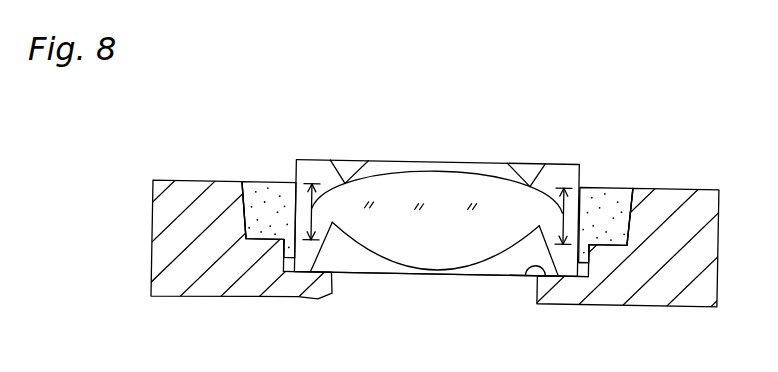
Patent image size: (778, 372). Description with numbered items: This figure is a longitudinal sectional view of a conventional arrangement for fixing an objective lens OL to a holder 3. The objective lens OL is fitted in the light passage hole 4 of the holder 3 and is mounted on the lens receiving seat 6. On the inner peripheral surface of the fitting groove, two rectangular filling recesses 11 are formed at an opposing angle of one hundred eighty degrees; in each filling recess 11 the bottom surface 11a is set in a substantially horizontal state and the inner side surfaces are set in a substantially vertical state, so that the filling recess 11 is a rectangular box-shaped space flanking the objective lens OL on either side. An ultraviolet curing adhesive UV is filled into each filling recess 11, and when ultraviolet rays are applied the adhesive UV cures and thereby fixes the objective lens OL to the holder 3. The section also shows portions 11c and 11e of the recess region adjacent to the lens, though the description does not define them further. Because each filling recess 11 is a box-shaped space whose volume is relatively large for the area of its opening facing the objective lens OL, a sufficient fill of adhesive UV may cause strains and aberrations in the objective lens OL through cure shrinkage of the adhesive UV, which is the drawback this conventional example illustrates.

The holder 3 is at (173, 270).
The light passage hole 4 is at (337, 285).
The lens receiving seat 6 is at (527, 266).
The filling recess 11 is at (274, 177).
The bottom surface 11a is at (268, 240).
The UV-curable adhesive portion 11c is at (248, 180).
The engaging notch 11e is at (362, 163).
The objective lens OL is at (429, 182).
The ultraviolet curing adhesive UV is at (288, 188).